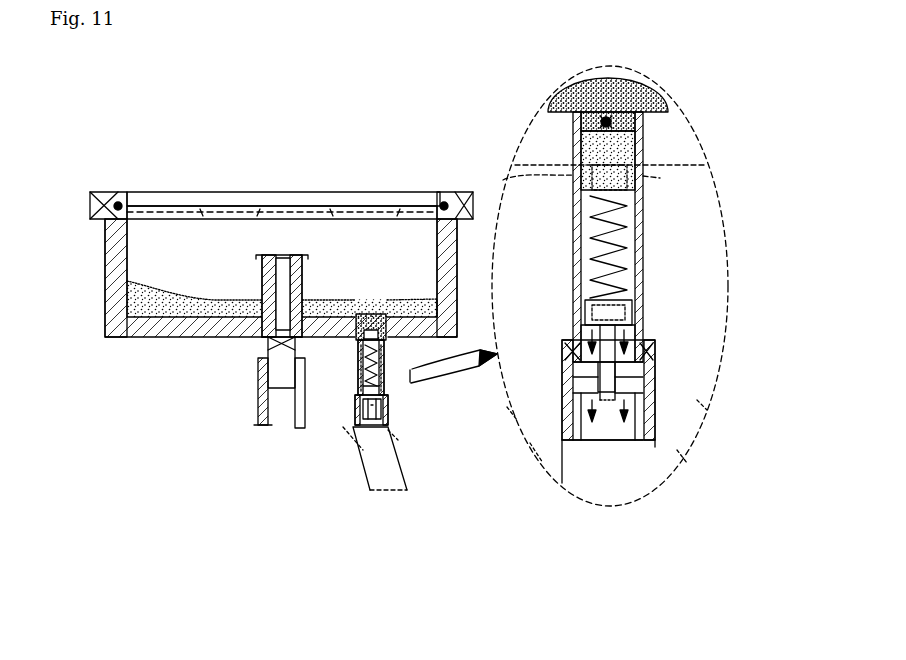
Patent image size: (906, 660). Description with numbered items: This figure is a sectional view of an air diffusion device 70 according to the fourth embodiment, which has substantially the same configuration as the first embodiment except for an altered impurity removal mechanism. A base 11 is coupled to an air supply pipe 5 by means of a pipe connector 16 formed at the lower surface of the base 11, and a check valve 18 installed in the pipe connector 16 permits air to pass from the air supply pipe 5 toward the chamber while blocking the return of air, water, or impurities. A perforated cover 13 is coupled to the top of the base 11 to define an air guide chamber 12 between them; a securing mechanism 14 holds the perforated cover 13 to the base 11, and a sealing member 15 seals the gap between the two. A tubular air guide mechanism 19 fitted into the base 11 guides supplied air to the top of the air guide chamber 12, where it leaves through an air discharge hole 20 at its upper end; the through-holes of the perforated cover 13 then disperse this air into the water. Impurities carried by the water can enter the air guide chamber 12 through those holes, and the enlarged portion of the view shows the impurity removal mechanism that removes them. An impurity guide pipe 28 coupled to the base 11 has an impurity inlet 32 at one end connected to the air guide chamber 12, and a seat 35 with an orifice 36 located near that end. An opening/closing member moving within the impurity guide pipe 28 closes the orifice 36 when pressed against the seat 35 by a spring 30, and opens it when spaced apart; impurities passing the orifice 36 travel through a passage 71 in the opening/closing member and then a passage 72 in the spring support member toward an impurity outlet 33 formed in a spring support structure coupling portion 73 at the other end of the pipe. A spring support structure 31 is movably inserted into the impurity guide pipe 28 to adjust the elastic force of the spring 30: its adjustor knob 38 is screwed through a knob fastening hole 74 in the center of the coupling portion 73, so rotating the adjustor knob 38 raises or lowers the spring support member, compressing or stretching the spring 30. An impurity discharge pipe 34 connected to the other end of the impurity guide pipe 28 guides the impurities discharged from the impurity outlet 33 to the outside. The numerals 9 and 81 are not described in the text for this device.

The air diffusion device 70 is at (128, 124).
The base 11 is at (115, 284).
The air guide chamber 12 is at (141, 258).
The perforated cover 13 is at (328, 200).
The securing mechanism 14 is at (464, 193).
The sealing member 15 is at (116, 202).
The air guide mechanism 19 is at (311, 267).
The check valve 18 is at (270, 347).
The pipe connector 16 is at (268, 359).
The air supply pipe 5 is at (260, 398).
The granular deodorant 9 is at (425, 287).
The spring 30 is at (392, 364).
The impurity guide pipe 28 is at (356, 372).
The spring support structure 31 is at (368, 442).
The impurity discharge pipe 34 is at (388, 493).
The impurity outlet 33 is at (573, 362).
The orifice 36 is at (606, 118).
The impurity inlet 32 is at (628, 106).
The seat 35 is at (640, 122).
The passage 71 is at (652, 178).
The air discharge hole 20 is at (646, 238).
The passage 72 is at (648, 307).
The spring support structure coupling portion 73 is at (656, 377).
The knob fastening hole 74 is at (655, 400).
The flow path 81 is at (618, 436).
The adjustor knob 38 is at (611, 416).